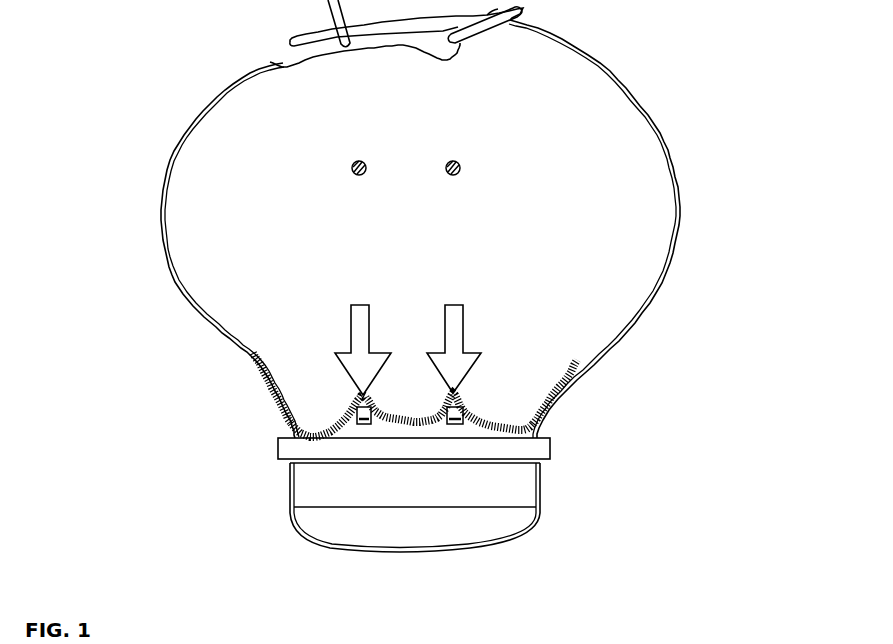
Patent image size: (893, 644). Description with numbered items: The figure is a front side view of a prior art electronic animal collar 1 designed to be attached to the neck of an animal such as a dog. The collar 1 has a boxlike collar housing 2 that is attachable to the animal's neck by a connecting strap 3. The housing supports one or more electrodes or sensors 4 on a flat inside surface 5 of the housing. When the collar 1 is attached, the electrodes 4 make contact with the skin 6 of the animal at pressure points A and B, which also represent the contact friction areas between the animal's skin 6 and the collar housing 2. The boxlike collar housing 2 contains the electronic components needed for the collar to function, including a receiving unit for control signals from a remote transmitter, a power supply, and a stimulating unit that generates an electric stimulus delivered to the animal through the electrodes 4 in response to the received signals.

The electronic animal collar 1 is at (694, 126).
The collar housing 2 is at (517, 483).
The connecting strap 3 is at (677, 238).
The electrodes 4 is at (383, 415).
The flat inside surface 5 is at (397, 417).
The skin 6 is at (289, 415).